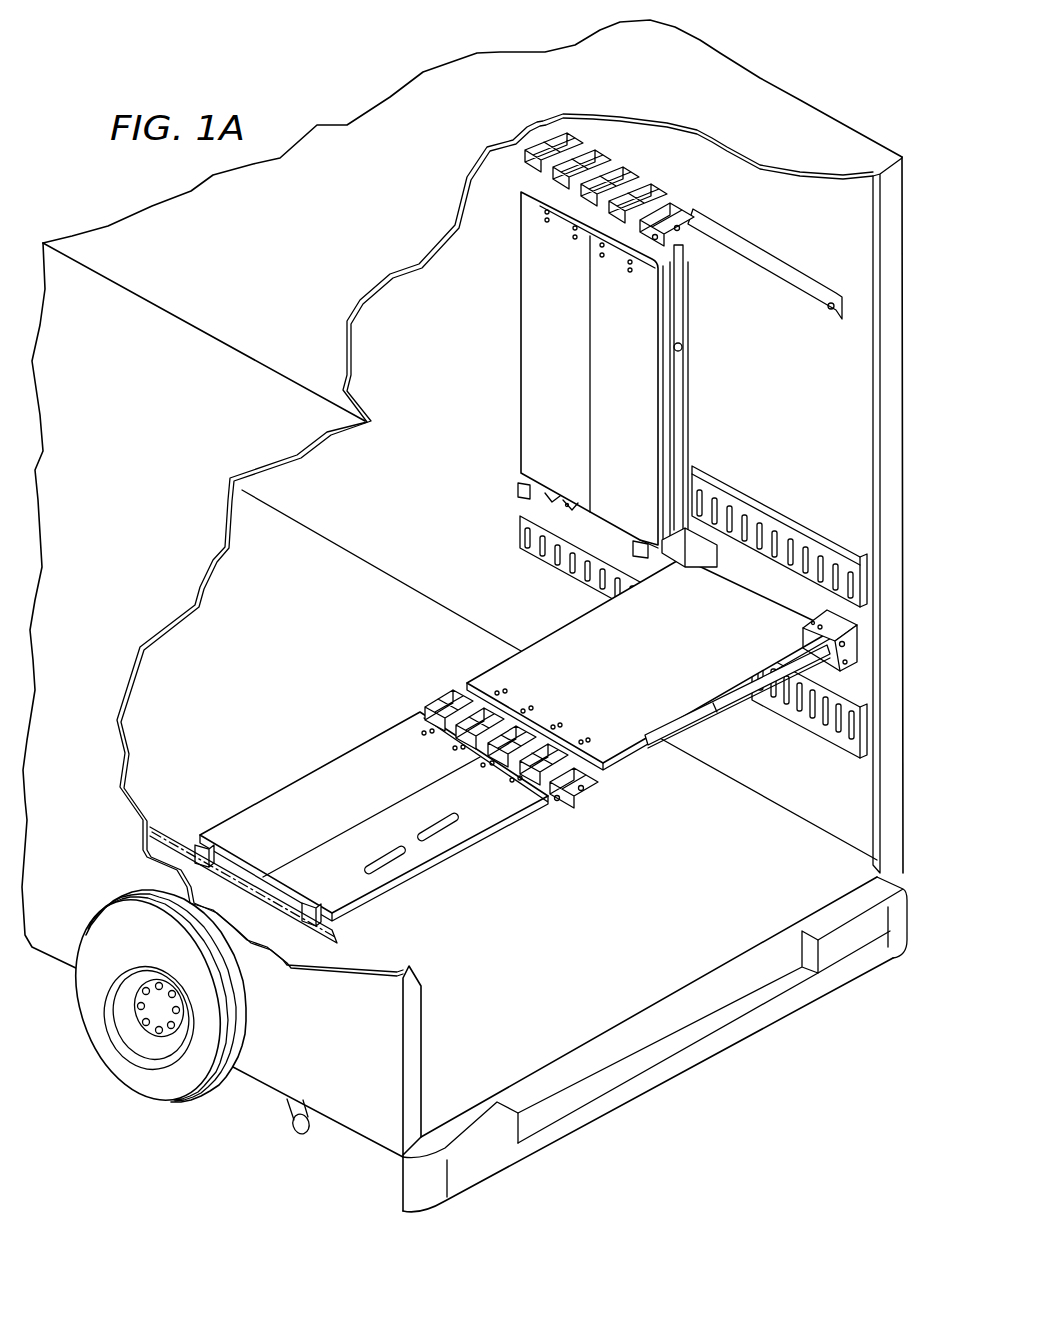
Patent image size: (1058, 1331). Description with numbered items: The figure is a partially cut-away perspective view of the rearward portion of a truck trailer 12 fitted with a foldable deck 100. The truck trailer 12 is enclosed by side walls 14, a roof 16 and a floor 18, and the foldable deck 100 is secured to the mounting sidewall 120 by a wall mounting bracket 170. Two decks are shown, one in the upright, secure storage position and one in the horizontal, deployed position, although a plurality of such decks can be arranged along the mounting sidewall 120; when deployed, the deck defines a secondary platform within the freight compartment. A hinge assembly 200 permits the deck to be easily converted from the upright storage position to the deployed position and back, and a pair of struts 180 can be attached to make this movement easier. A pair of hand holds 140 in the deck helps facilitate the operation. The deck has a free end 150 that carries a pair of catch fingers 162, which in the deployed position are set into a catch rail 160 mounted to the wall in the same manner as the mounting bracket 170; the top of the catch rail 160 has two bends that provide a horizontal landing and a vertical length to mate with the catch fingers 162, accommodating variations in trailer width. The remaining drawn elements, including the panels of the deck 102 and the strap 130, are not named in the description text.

The truck trailer 12 is at (704, 52).
The side walls 14 is at (826, 112).
The roof 16 is at (330, 244).
The floor 18 is at (559, 973).
The foldable deck 100 is at (514, 559).
The mounting plate 102 is at (642, 357).
The mounting sidewall 120 is at (786, 372).
The support strap 130 is at (807, 282).
The hand holds 140 is at (436, 834).
The free end 150 is at (512, 471).
The catch rail 160 is at (158, 832).
The catch fingers 162 is at (525, 489).
The wall mounting bracket 170 is at (848, 674).
The struts 180 is at (692, 450).
The hinge assembly 200 is at (704, 208).